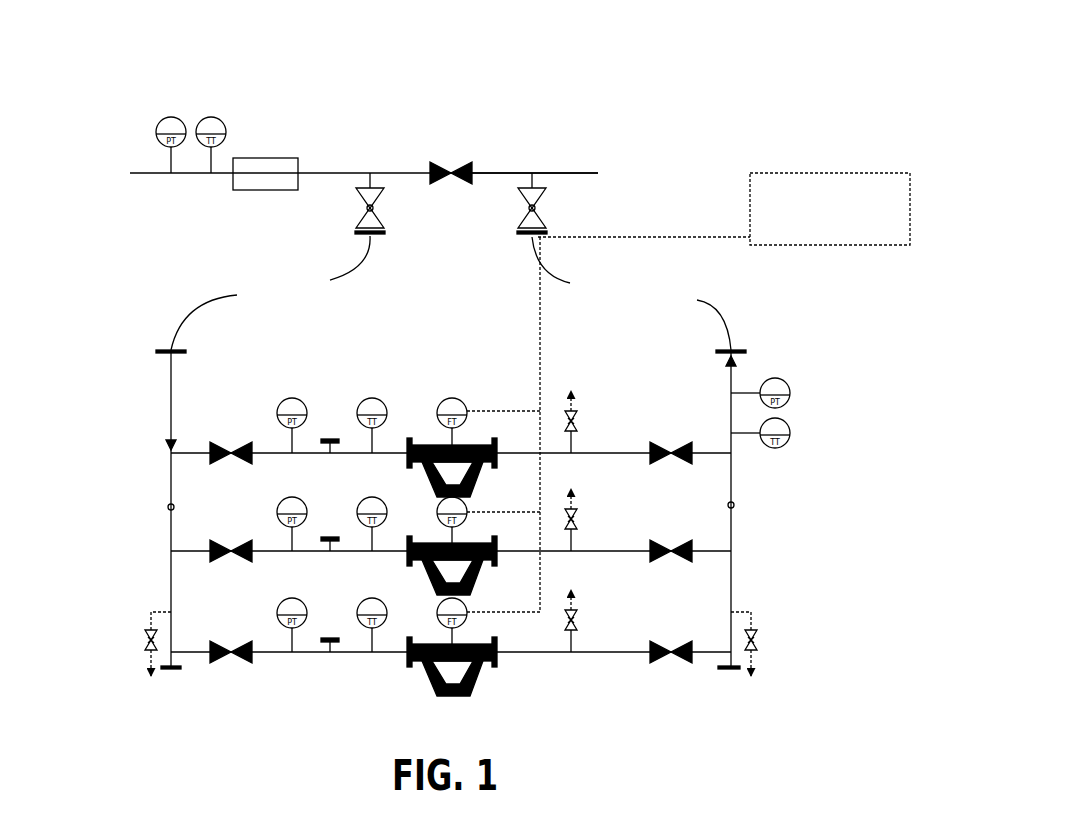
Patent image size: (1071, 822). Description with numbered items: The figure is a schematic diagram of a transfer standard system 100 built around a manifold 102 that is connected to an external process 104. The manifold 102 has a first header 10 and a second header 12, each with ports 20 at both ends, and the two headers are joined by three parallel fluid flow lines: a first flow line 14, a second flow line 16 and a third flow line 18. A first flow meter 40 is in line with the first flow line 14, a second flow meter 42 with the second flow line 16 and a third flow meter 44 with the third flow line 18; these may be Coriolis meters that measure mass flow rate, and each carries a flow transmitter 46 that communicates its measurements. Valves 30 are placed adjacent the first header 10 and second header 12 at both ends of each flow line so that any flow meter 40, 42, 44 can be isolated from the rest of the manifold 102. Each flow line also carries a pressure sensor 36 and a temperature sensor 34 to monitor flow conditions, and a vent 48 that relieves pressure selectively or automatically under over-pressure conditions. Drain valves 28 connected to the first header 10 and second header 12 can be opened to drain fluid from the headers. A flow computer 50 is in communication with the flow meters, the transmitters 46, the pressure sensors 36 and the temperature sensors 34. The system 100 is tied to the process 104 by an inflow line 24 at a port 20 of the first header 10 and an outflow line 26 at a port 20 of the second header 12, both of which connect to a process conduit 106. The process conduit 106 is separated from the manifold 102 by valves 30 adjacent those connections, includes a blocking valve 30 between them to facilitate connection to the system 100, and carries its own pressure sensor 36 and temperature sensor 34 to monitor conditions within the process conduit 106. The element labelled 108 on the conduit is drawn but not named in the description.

The first header 10 is at (168, 383).
The second header 12 is at (733, 541).
The first flow line 14 is at (188, 450).
The second flow line 16 is at (188, 548).
The third flow line 18 is at (188, 649).
The ports 20 is at (162, 348).
The inflow line 24 is at (344, 280).
The outflow line 26 is at (699, 305).
The drain valves 28 is at (145, 641).
The valves 30 is at (452, 166).
The temperature sensor 34 is at (219, 120).
The pressure sensor 36 is at (171, 117).
The first flow meter 40 is at (472, 447).
The second flow meter 42 is at (496, 549).
The third flow meter 44 is at (480, 670).
The flow transmitter 46 is at (453, 398).
The vent 48 is at (336, 440).
The flow computer 50 is at (831, 172).
The transfer standard system 100 is at (678, 150).
The manifold 102 is at (134, 504).
The process 104 is at (388, 150).
The process conduit 106 is at (505, 170).
The filter 108 is at (268, 172).